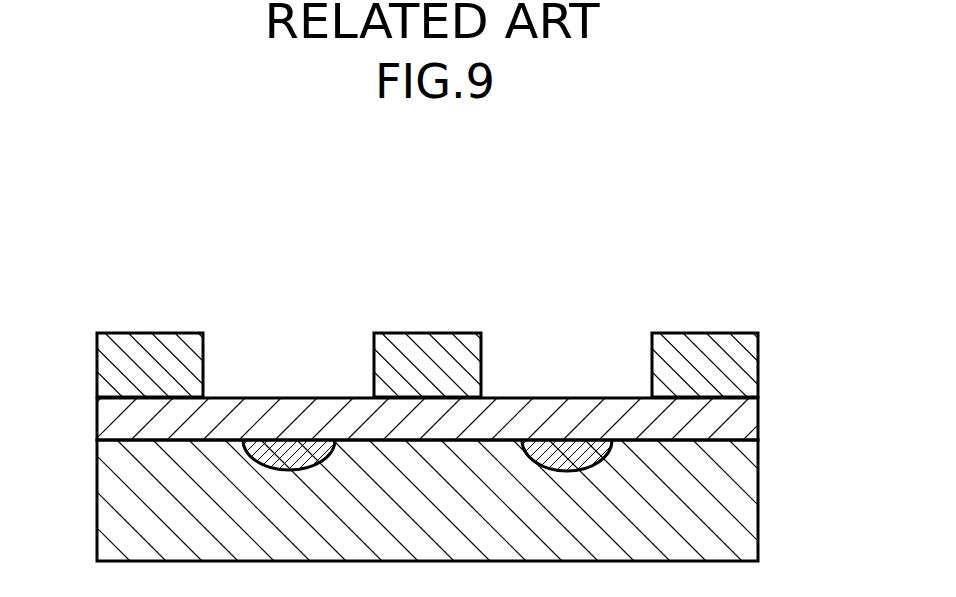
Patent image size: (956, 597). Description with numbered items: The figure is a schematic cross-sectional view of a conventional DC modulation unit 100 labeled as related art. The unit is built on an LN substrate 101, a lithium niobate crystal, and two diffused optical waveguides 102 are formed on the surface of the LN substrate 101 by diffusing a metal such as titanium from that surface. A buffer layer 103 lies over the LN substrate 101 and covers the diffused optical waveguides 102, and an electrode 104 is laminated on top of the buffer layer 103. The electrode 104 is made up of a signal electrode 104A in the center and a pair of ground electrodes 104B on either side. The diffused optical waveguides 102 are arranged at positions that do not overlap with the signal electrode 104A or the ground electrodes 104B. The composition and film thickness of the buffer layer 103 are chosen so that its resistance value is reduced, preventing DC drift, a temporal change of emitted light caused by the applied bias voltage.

The DC modulation unit 100 is at (724, 175).
The LN substrate 101 is at (747, 483).
The diffused optical waveguides 102 is at (287, 453).
The buffer layer 103 is at (747, 422).
The electrode 104 is at (426, 323).
The signal electrode 104A is at (427, 368).
The ground electrodes 104B is at (703, 367).